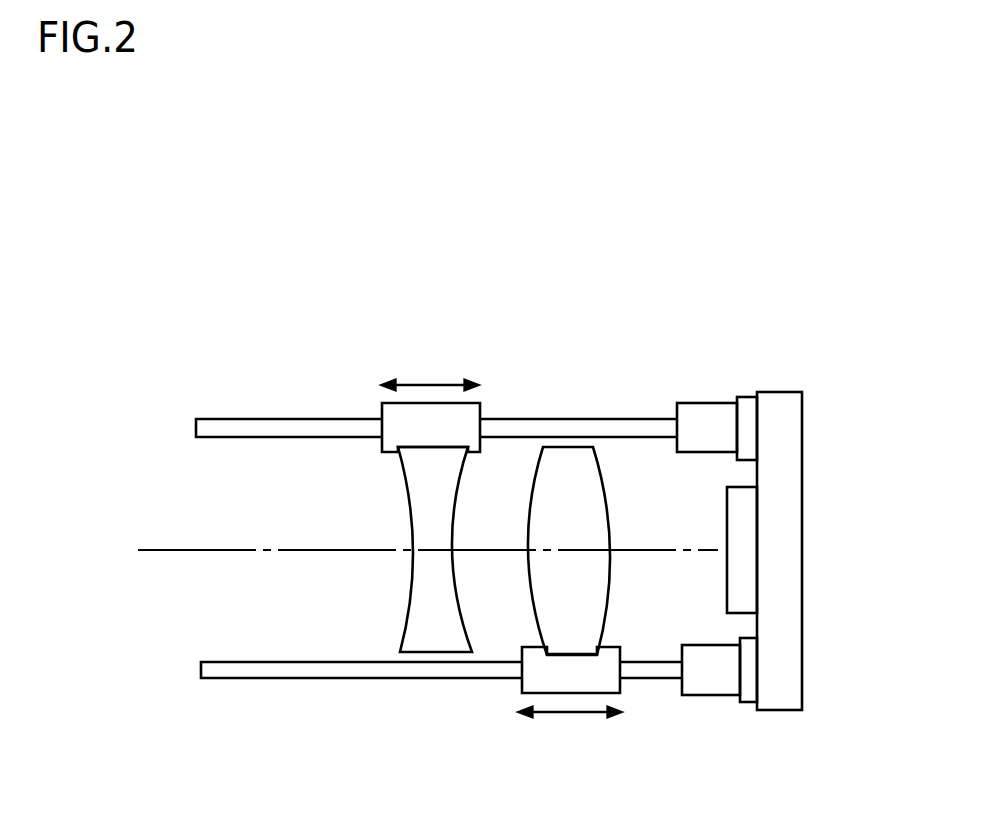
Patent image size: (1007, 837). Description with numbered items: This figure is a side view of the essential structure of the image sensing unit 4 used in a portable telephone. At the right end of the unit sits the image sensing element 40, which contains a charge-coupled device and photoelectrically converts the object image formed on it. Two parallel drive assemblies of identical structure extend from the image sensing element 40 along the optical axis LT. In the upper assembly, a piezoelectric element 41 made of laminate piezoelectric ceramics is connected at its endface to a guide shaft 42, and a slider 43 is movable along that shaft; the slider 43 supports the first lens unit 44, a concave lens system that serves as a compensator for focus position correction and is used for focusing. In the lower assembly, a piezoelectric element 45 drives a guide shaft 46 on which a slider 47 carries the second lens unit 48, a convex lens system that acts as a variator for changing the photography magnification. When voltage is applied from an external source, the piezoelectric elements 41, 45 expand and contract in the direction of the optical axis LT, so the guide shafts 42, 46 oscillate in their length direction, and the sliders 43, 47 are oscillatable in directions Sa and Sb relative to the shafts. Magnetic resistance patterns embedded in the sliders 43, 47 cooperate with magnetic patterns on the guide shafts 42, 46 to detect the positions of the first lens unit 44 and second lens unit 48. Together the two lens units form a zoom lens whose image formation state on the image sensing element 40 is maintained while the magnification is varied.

The image sensing unit 4 is at (209, 269).
The optical axis LT is at (174, 550).
The image sensing element 40 is at (745, 487).
The piezoelectric element 41 is at (707, 403).
The guide shaft 42 is at (265, 418).
The slider 43 is at (480, 404).
The first lens unit 44 is at (407, 483).
The piezoelectric element 45 is at (713, 695).
The guide shaft 46 is at (270, 678).
The slider 47 is at (622, 693).
The second lens unit 48 is at (605, 483).
The oscillation direction Sa is at (430, 384).
The oscillation direction Sb is at (572, 712).